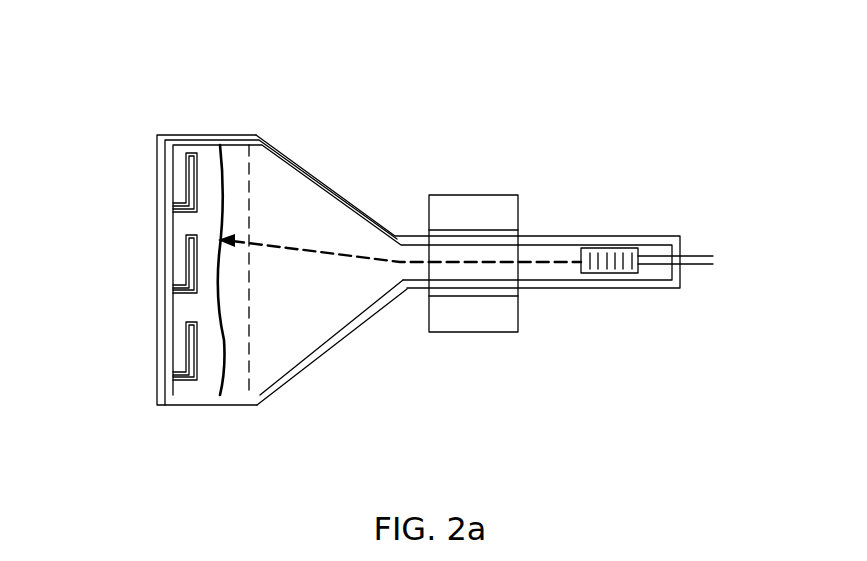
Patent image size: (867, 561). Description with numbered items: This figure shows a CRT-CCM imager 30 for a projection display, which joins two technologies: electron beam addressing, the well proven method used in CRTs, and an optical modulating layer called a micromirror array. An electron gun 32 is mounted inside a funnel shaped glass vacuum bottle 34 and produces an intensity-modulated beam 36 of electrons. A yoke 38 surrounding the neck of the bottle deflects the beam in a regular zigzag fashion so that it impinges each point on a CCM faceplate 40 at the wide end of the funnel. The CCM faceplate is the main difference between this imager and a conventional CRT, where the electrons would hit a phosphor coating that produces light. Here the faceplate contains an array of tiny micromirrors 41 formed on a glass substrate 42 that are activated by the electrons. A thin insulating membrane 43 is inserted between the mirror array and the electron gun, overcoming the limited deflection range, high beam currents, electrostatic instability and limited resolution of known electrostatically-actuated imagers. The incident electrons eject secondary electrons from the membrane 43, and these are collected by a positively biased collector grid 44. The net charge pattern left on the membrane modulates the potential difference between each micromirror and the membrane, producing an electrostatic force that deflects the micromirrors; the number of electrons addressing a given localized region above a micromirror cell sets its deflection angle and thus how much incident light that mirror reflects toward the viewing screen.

The CRT-CCM imager 30 is at (388, 255).
The electron gun 32 is at (624, 241).
The funnel shaped glass vacuum bottle 34 is at (270, 388).
The intensity-modulated beam 36 is at (316, 260).
The yoke 38 is at (498, 207).
The CCM faceplate 40 is at (172, 223).
The micromirrors 41 is at (200, 185).
The glass substrate 42 is at (165, 333).
The insulating membrane 43 is at (224, 346).
The collector grid 44 is at (251, 177).